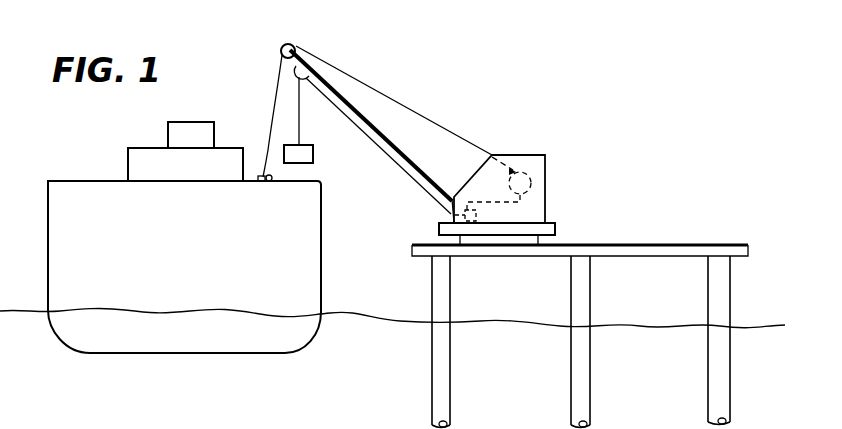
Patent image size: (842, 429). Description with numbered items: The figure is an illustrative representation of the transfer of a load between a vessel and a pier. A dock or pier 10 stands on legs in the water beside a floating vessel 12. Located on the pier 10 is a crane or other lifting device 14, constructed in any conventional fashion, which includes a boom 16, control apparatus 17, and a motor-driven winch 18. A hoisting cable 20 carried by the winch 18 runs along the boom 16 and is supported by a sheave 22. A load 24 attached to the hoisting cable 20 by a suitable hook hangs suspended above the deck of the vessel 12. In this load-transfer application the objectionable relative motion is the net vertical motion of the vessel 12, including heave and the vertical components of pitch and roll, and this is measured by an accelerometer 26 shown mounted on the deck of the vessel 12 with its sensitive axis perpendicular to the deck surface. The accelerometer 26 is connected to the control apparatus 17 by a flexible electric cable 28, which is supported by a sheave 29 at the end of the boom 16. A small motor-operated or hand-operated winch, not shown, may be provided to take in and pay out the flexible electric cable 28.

The pier 10 is at (655, 250).
The vessel 12 is at (82, 198).
The crane 14 is at (545, 164).
The boom 16 is at (418, 174).
The control apparatus 17 is at (477, 215).
The motor-driven winch 18 is at (532, 183).
The hoisting cable 20 is at (437, 123).
The sheave 22 is at (310, 60).
The load 24 is at (312, 158).
The accelerometer 26 is at (268, 182).
The flexible electric cable 28 is at (271, 72).
The sheave 29 is at (287, 44).